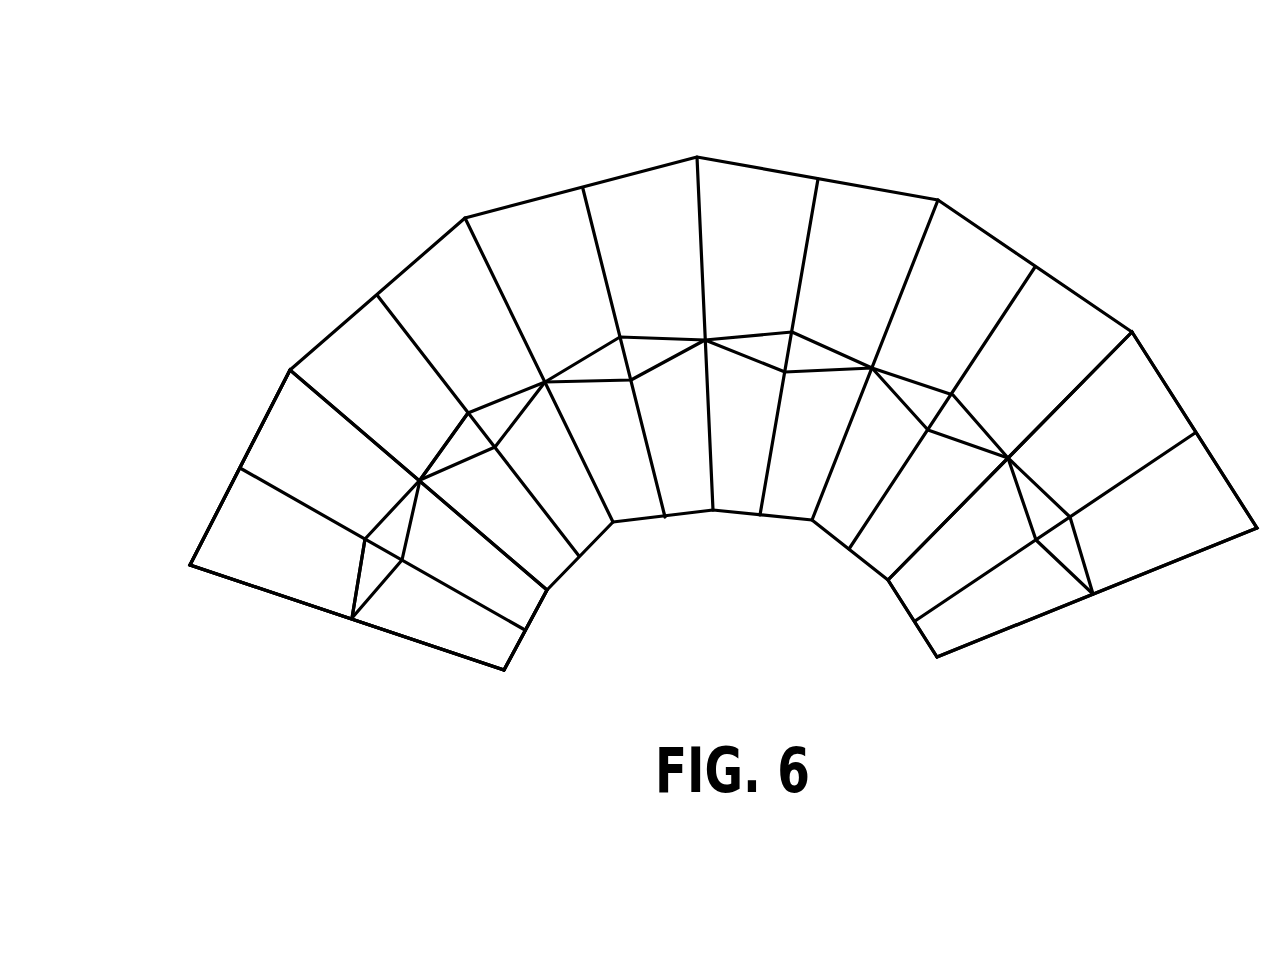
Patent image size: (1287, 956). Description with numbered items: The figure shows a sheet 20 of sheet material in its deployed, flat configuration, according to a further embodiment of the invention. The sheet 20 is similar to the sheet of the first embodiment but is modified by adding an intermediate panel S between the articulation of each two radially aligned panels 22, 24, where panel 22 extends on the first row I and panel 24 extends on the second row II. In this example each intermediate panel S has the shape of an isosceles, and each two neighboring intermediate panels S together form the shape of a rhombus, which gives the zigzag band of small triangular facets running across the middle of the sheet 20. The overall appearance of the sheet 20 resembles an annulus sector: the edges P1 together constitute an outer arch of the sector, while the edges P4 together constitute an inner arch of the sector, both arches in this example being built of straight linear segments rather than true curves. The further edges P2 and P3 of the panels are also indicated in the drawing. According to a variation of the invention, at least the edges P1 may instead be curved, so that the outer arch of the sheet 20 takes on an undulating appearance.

The sheet 20 is at (493, 193).
The edges P1 is at (207, 526).
The intermediate panel S is at (393, 540).
The panel edge P2 is at (360, 572).
The panel edge P3 is at (412, 525).
The edges P4 is at (530, 647).
The panel 24 is at (242, 555).
The panel 22 is at (427, 608).
The first row I is at (307, 608).
The second row II is at (455, 660).